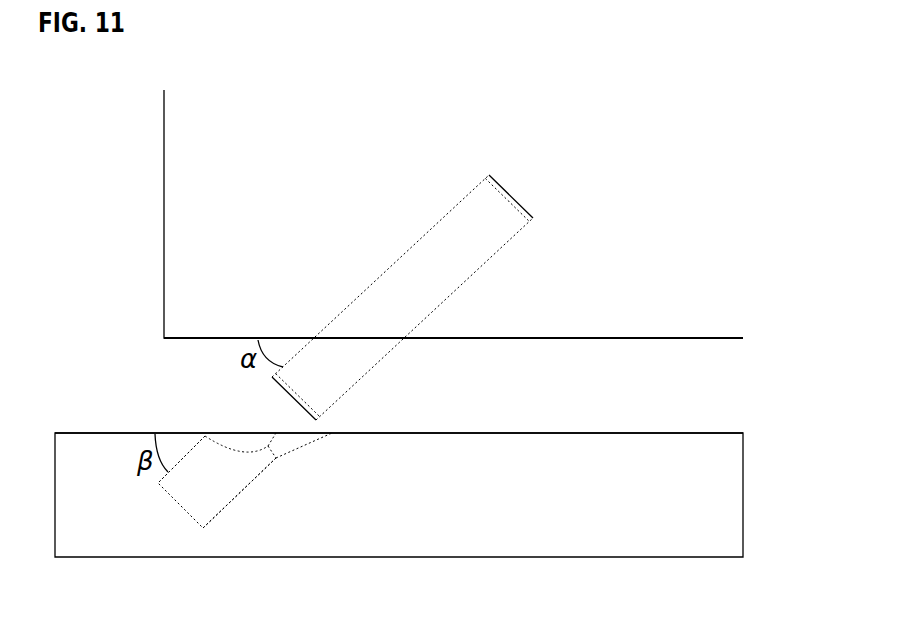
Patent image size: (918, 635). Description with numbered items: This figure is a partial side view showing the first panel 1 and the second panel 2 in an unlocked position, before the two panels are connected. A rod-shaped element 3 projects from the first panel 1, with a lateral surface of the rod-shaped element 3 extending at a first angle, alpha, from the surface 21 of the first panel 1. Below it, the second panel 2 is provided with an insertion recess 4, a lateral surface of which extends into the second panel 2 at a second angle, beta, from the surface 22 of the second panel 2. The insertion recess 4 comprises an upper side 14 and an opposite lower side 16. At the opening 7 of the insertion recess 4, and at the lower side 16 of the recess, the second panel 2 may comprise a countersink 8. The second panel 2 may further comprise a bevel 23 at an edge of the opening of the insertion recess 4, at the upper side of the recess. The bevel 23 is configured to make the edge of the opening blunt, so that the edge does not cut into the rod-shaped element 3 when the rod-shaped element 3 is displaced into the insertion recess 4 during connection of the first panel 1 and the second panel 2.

The first panel 1 is at (261, 215).
The second panel 2 is at (471, 504).
The rod-shaped element 3 is at (342, 373).
The insertion recess 4 is at (218, 488).
The opening 7 is at (243, 430).
The countersink 8 is at (305, 445).
The upper side 14 is at (193, 447).
The lower side 16 is at (265, 470).
The surface of the first panel 21 is at (542, 338).
The surface of the second panel 22 is at (660, 433).
The bevel 23 is at (205, 432).